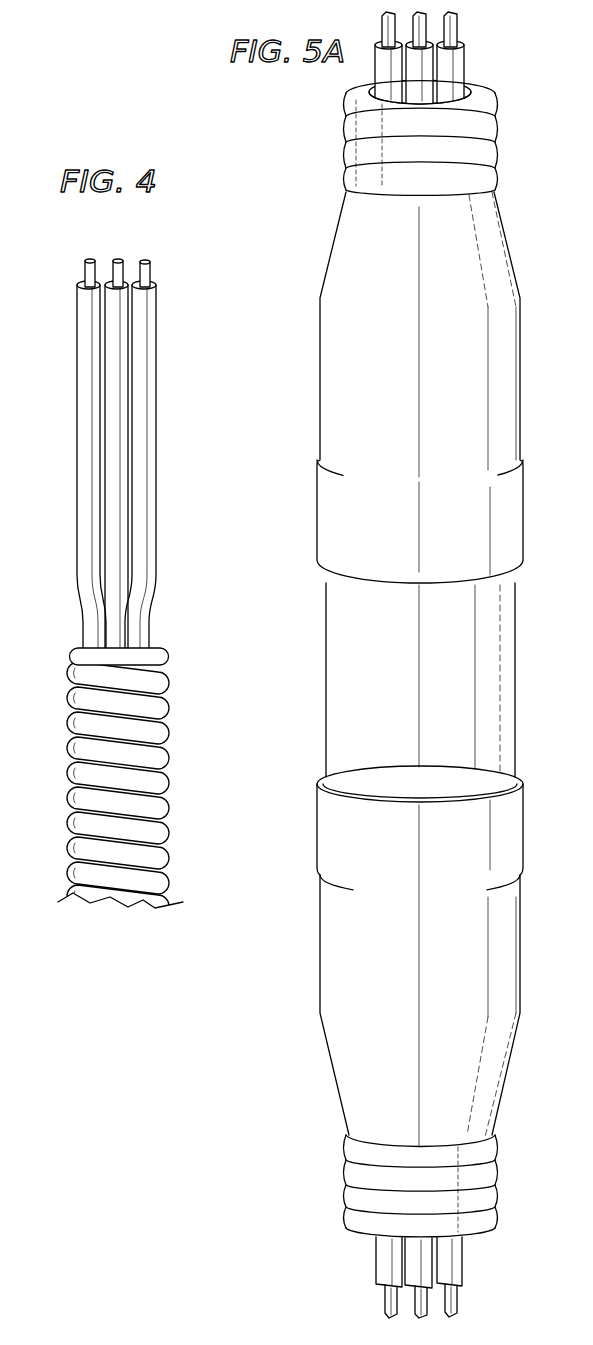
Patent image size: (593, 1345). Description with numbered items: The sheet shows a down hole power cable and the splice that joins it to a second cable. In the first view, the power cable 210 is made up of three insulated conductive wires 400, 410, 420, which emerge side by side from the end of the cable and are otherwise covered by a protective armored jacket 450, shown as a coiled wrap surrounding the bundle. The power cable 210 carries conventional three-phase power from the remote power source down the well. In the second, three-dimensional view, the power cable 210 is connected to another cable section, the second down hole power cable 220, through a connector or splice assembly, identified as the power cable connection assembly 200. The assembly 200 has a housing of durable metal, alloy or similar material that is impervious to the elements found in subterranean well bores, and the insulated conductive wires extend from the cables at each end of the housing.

In FIG. 5A, the power cable connection assembly 200 is at (368, 665).
In FIG. 4, the power cable 210 is at (155, 789).
In FIG. 5A, the power cable 210 is at (346, 130).
In FIG. 5A, the second down hole power cable 220 is at (346, 1170).
In FIG. 4, the insulated conductive wire 400 is at (148, 262).
In FIG. 4, the insulated conductive wire 410 is at (119, 258).
In FIG. 4, the insulated conductive wire 420 is at (86, 259).
In FIG. 4, the protective armored jacket 450 is at (169, 706).